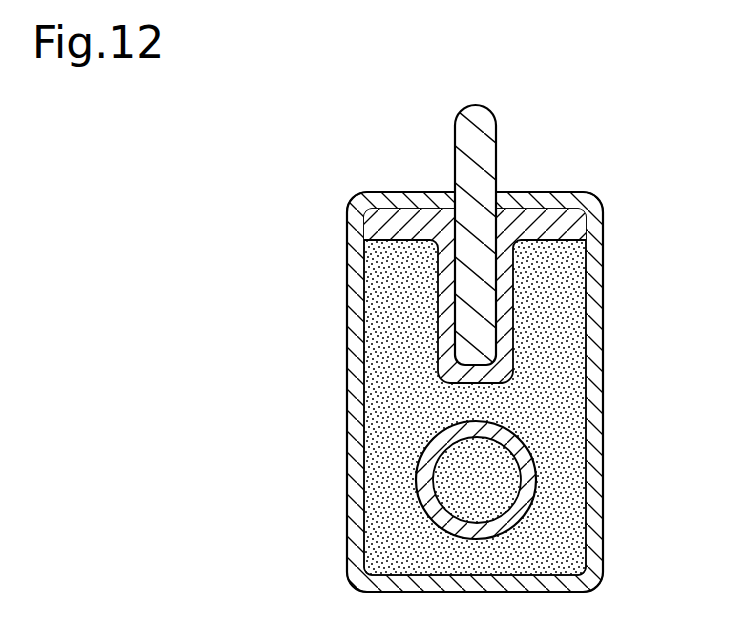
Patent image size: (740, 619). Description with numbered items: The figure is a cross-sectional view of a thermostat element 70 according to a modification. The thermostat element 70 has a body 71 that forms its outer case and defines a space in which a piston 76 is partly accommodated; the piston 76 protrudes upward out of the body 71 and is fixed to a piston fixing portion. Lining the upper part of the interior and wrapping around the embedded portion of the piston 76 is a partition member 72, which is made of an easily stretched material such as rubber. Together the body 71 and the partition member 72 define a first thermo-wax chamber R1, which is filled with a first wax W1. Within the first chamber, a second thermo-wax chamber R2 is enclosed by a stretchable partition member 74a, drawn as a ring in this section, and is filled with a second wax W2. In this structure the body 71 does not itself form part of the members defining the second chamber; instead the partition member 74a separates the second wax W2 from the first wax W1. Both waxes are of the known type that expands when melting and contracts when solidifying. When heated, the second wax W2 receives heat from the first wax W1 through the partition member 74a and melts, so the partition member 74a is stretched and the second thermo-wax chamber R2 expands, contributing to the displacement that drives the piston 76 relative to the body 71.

The thermostat element 70 is at (509, 348).
The body 71 is at (603, 262).
The partition member 72 is at (582, 220).
The stretchable partition member 74a is at (544, 480).
The piston 76 is at (497, 119).
The first thermo-wax chamber R1 is at (558, 372).
The second thermo-wax chamber R2 is at (486, 455).
The first wax W1 is at (548, 338).
The second wax W2 is at (474, 480).